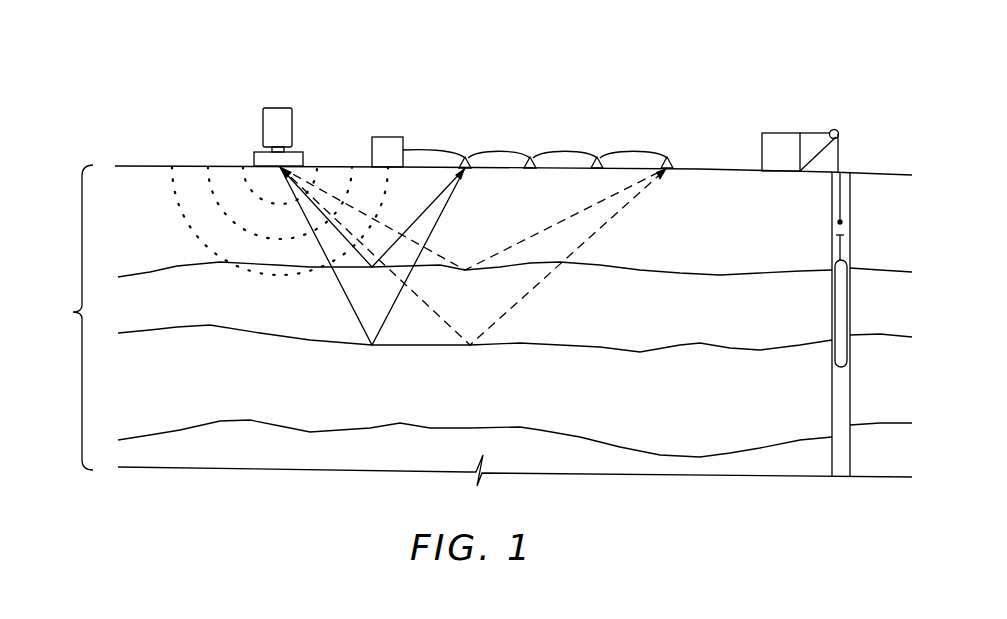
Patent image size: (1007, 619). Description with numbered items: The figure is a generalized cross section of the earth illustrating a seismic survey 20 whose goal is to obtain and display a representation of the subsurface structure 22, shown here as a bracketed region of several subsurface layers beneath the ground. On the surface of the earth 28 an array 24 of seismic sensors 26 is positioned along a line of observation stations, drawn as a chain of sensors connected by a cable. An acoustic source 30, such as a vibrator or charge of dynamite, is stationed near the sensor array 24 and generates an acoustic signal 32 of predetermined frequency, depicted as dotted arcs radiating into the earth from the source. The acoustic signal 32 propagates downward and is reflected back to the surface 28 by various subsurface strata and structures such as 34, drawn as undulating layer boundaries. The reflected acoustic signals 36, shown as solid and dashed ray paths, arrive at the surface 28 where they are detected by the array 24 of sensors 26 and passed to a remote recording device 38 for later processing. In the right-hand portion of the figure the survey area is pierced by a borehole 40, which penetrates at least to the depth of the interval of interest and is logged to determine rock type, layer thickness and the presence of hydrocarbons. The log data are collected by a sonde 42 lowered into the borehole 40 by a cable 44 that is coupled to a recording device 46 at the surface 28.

The seismic survey 20 is at (326, 73).
The subsurface structure 22 is at (66, 317).
The array of seismic sensors 24 is at (646, 108).
The seismic sensors 26 is at (470, 155).
The surface of the earth 28 is at (150, 165).
The acoustic source 30 is at (276, 107).
The acoustic signal 32 is at (280, 221).
The subsurface strata 34 is at (147, 275).
The reflected acoustic signals 36 is at (442, 199).
The remote recording device 38 is at (387, 137).
The borehole 40 is at (848, 203).
The sonde 42 is at (843, 302).
The cable 44 is at (840, 148).
The recording device 46 is at (780, 133).